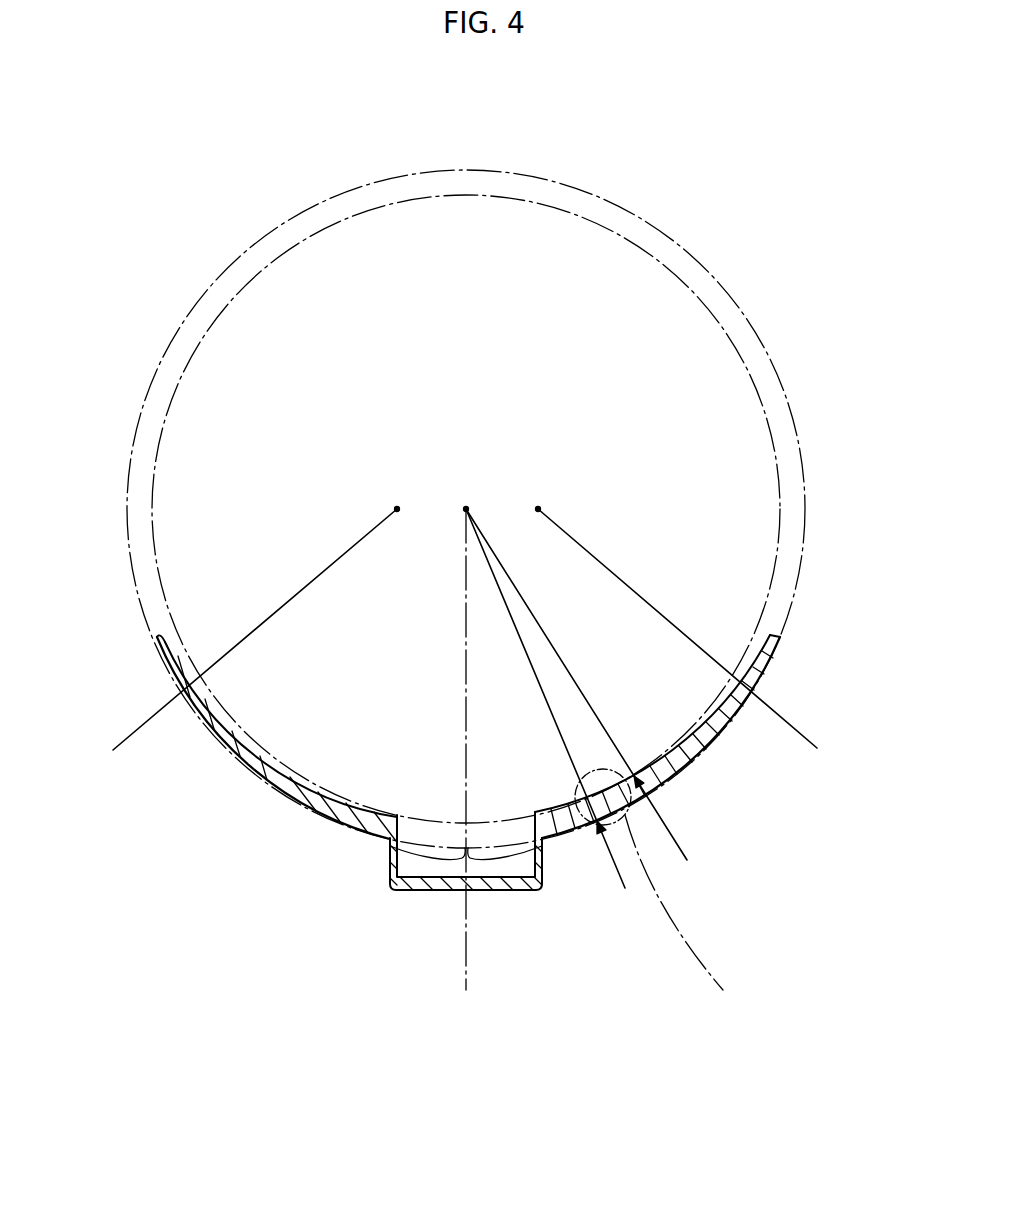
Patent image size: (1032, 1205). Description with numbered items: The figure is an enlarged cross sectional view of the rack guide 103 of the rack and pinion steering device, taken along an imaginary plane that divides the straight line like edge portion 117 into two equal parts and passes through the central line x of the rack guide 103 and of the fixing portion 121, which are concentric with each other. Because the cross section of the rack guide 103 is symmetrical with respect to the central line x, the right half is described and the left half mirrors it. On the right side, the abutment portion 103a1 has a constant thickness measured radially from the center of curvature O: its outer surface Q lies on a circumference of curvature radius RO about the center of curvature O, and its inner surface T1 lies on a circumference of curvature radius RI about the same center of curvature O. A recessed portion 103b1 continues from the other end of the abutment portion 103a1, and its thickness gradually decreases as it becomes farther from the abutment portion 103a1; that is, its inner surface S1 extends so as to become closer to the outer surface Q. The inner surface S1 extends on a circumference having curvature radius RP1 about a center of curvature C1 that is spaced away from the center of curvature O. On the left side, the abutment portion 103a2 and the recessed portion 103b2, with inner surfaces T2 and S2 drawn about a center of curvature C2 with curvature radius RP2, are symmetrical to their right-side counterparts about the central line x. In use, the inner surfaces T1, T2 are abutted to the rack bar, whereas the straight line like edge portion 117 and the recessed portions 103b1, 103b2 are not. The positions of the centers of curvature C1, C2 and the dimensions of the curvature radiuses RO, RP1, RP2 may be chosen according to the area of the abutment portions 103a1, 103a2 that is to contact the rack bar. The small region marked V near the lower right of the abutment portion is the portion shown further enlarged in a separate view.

The rack guide 103 is at (471, 521).
The abutment portion 103a1 is at (728, 737).
The abutment portion 103a2 is at (208, 737).
The recessed portion 103b1 is at (786, 633).
The recessed portion 103b2 is at (143, 637).
The straight line like edge portion 117 is at (778, 632).
The fixing portion 121 is at (497, 884).
The center of curvature O is at (466, 509).
The center of curvature C1 is at (538, 509).
The center of curvature C2 is at (397, 509).
The inner surface S1 is at (750, 683).
The inner surface S2 is at (178, 658).
The inner surface T1 is at (688, 749).
The inner surface T2 is at (262, 745).
The curvature radius RP1 is at (711, 644).
The curvature radius RP2 is at (227, 648).
The outer surface Q is at (723, 738).
The curvature radius RI is at (591, 699).
The curvature radius RO is at (559, 719).
The V portion V is at (688, 918).
The central line x is at (465, 943).